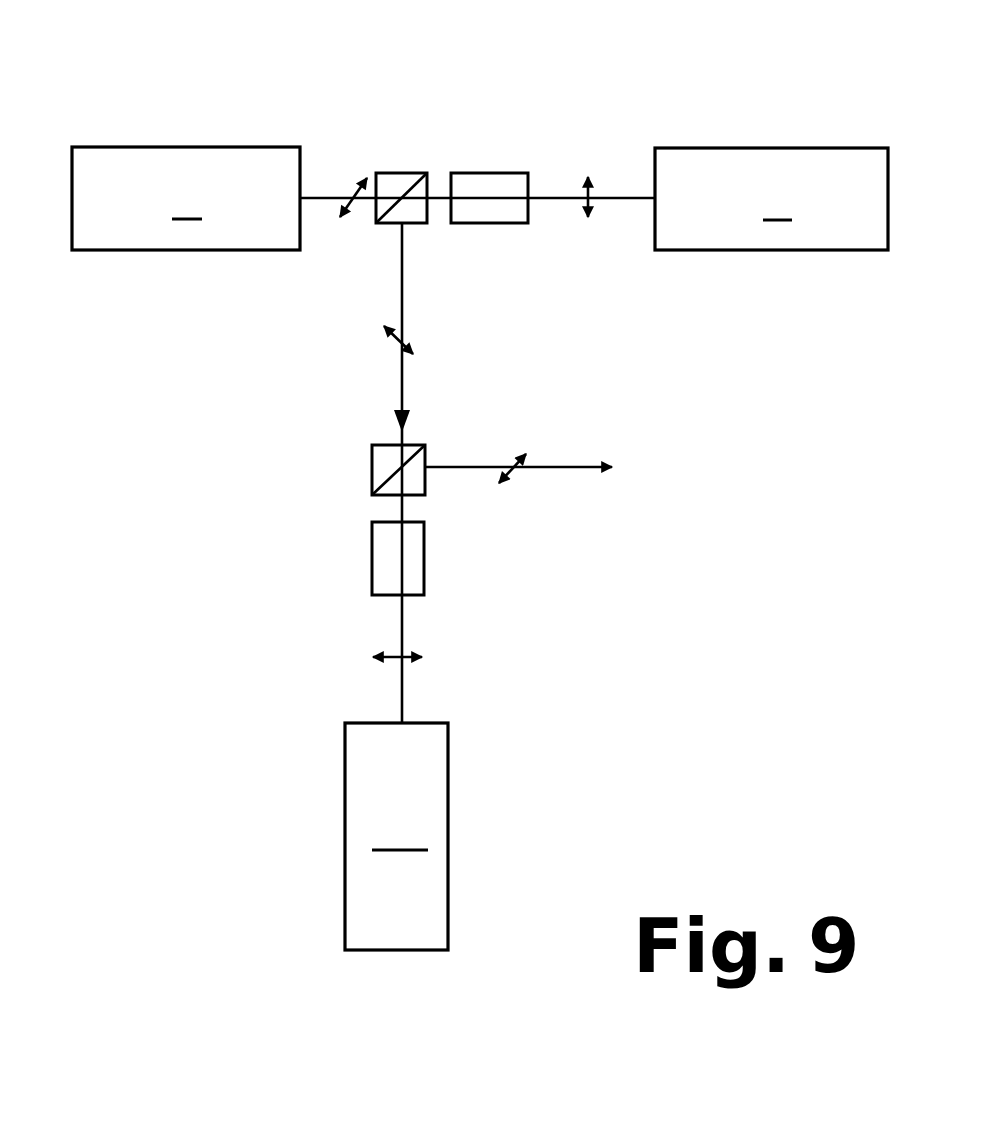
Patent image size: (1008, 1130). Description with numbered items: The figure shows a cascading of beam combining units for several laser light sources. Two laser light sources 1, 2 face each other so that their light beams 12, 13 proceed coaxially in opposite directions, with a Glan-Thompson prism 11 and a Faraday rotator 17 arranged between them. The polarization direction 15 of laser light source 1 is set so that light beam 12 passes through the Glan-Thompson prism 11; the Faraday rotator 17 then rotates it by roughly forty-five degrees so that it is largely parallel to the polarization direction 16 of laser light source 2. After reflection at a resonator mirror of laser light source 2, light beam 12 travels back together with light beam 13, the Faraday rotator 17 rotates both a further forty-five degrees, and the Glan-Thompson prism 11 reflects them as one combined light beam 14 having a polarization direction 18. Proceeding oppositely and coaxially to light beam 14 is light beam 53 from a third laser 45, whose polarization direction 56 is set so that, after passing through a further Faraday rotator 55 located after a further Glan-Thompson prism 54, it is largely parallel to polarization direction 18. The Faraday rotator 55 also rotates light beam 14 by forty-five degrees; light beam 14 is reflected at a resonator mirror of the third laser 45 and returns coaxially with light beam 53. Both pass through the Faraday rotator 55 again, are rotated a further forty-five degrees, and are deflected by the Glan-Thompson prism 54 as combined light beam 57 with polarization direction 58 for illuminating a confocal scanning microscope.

The laser light source 1 is at (186, 198).
The laser light source 2 is at (771, 199).
The Glan-Thompson prism 11 is at (403, 178).
The light beam 12 is at (332, 197).
The light beam 13 is at (615, 198).
The combined light beam 14 is at (402, 262).
The polarization direction 15 is at (338, 218).
The polarization direction 16 is at (588, 228).
The Faraday rotator 17 is at (488, 185).
The polarization direction 18 is at (377, 323).
The third laser 45 is at (396, 836).
The light beam 53 is at (400, 687).
The Glan-Thompson prism 54 is at (383, 463).
The Faraday rotator 55 is at (385, 553).
The polarization direction 56 is at (433, 657).
The combined light beam 57 is at (558, 470).
The polarization direction 58 is at (497, 492).